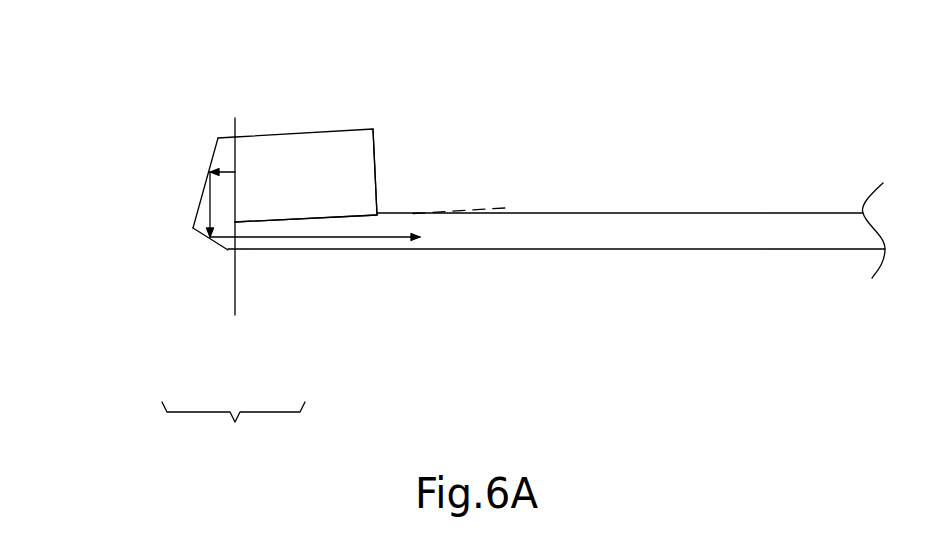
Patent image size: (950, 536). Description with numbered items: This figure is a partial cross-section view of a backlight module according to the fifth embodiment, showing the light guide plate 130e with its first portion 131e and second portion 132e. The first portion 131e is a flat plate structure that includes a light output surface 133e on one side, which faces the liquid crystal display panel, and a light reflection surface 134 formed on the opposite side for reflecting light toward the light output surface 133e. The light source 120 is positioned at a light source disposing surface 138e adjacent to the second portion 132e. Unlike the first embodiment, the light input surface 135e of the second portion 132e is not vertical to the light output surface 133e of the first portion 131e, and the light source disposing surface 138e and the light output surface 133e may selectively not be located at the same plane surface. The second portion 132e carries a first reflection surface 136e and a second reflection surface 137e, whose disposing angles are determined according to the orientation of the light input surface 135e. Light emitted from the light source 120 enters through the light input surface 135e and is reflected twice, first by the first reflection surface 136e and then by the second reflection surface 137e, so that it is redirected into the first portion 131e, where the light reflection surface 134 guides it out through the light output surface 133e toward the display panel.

The light source 120 is at (298, 148).
The light guide plate 130e is at (233, 432).
The first portion 131e is at (310, 272).
The second portion 132e is at (200, 272).
The light output surface 133e is at (743, 213).
The light reflection surface 134 is at (745, 250).
The light input surface 135e is at (234, 183).
The first reflection surface 136e is at (192, 185).
The second reflection surface 137e is at (197, 229).
The light source disposing surface 138e is at (340, 216).